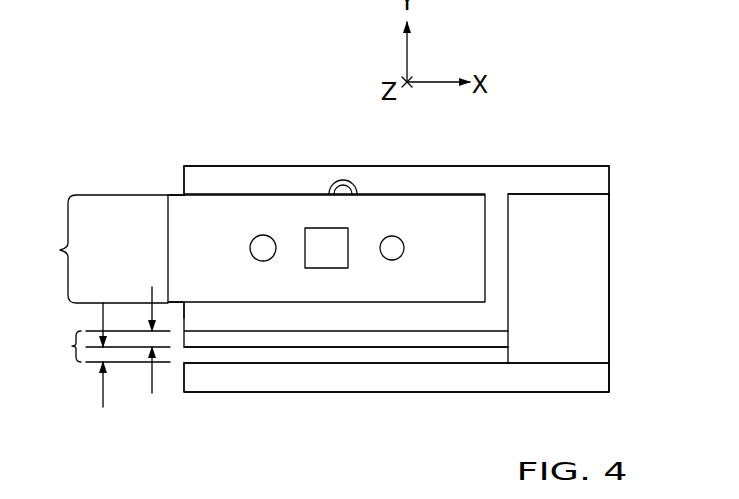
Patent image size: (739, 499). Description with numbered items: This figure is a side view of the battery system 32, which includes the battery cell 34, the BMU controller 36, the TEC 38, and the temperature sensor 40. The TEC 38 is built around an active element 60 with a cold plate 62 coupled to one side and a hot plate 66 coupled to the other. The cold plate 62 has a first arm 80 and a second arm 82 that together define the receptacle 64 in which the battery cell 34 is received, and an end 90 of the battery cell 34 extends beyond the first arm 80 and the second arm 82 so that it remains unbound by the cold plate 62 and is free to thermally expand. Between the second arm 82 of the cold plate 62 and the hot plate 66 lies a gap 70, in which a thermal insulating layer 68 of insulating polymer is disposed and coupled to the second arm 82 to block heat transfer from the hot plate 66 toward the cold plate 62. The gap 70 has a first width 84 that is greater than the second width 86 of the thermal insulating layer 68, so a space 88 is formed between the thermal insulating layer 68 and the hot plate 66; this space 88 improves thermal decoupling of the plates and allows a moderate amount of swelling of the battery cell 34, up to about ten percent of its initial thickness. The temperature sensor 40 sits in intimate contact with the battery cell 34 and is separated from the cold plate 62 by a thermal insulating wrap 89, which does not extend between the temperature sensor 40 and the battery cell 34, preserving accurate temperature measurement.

The battery system 32 is at (293, 127).
The battery cell 34 is at (165, 248).
The BMU controller 36 is at (328, 228).
The TEC 38 is at (637, 213).
The temperature sensor 40 is at (358, 183).
The active element 60 is at (578, 290).
The cold plate 62 is at (395, 165).
The receptacle 64 is at (92, 249).
The hot plate 66 is at (423, 387).
The thermal insulating layer 68 is at (327, 342).
The gap 70 is at (102, 346).
The first arm 80 is at (183, 183).
The second arm 82 is at (183, 318).
The first width 84 is at (103, 395).
The second width 86 is at (152, 393).
The space 88 is at (367, 353).
The thermal insulating wrap 89 is at (332, 183).
The end 90 is at (165, 192).